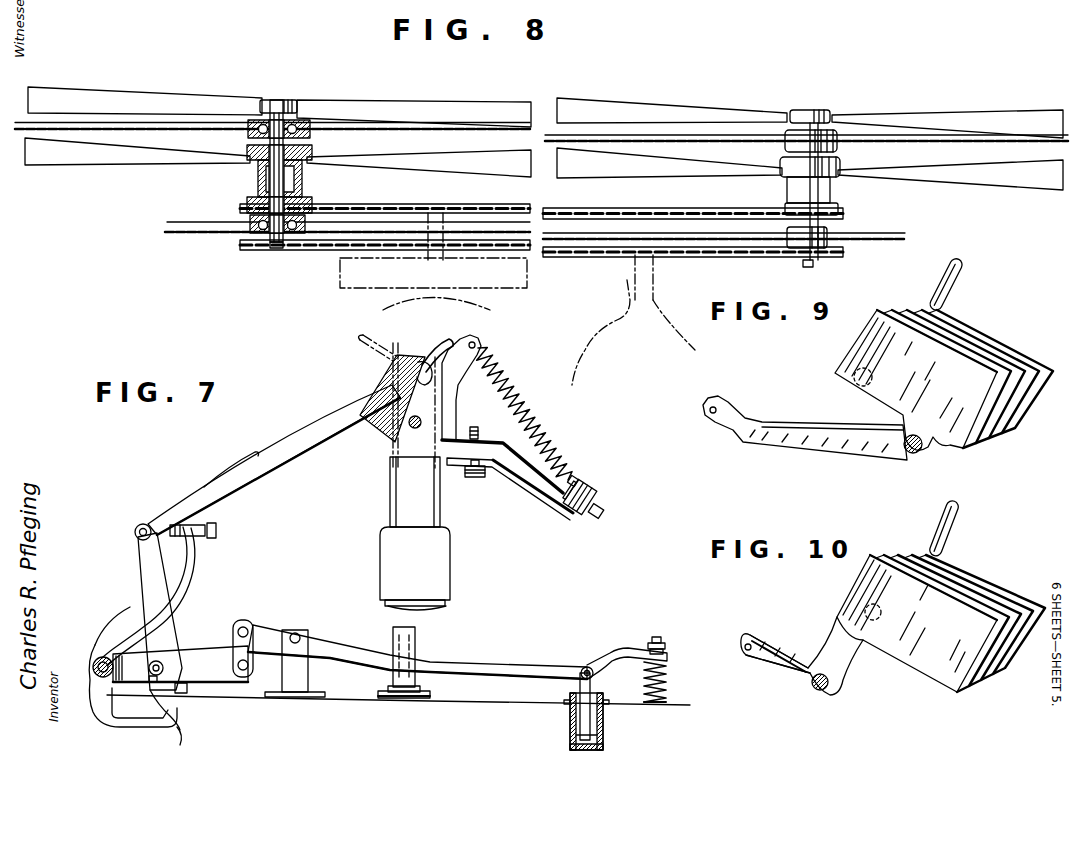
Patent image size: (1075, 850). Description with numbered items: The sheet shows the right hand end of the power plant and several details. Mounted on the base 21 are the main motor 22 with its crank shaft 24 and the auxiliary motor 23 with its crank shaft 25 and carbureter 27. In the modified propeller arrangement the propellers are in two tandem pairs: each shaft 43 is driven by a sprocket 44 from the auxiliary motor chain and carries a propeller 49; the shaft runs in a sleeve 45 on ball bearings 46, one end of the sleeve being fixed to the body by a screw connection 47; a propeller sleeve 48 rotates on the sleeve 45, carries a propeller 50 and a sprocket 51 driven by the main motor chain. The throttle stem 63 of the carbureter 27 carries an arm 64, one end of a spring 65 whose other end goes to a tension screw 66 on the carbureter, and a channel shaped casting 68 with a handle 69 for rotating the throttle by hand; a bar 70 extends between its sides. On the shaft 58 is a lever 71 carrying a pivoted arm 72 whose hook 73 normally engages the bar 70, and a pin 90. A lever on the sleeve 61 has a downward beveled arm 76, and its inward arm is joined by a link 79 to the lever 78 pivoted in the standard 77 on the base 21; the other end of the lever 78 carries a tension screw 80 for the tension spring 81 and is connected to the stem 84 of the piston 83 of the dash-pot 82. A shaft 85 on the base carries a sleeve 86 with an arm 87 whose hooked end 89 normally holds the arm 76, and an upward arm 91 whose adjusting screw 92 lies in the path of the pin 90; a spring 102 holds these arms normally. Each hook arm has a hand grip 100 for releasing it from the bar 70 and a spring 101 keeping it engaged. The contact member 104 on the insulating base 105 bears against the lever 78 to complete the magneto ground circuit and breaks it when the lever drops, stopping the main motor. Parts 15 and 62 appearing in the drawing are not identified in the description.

In FIG. 7, the bar 15 is at (218, 656).
In FIG. 7, the base 21 is at (483, 696).
In FIG. 8, the main motor 22 is at (478, 305).
In FIG. 8, the auxiliary motor 23 is at (608, 323).
In FIG. 8, the crank shaft 24 is at (449, 213).
In FIG. 8, the crank shaft 25 is at (635, 268).
In FIG. 7, the carbureter 27 is at (450, 541).
In FIG. 8, the shaft 43 is at (284, 100).
In FIG. 8, the sprocket 44 is at (250, 251).
In FIG. 8, the sleeve 45 is at (258, 188).
In FIG. 8, the ball bearing 46 is at (300, 126).
In FIG. 8, the screw connection 47 is at (250, 228).
In FIG. 8, the propeller sleeve 48 is at (256, 173).
In FIG. 8, the propeller 49 is at (458, 102).
In FIG. 8, the propeller 50 is at (90, 157).
In FIG. 8, the sprocket 51 is at (316, 208).
In FIG. 7, the shaft 58 is at (163, 663).
In FIG. 7, the sleeve 61 is at (522, 478).
In FIG. 7, the stop lug 62 is at (187, 692).
In FIG. 7, the throttle stem 63 is at (416, 430).
In FIG. 9, the throttle stem 63 is at (911, 453).
In FIG. 10, the throttle stem 63 is at (817, 692).
In FIG. 7, the arm 64 is at (452, 396).
In FIG. 9, the arm 64 is at (737, 428).
In FIG. 10, the arm 64 is at (768, 664).
In FIG. 7, the spring 65 is at (507, 381).
In FIG. 7, the tension screw 66 is at (603, 511).
In FIG. 7, the channel shaped casting 68 is at (373, 432).
In FIG. 9, the channel shaped casting 68 is at (1019, 358).
In FIG. 10, the channel shaped casting 68 is at (1000, 590).
In FIG. 7, the handle 69 is at (358, 343).
In FIG. 9, the handle 69 is at (960, 281).
In FIG. 10, the handle 69 is at (949, 526).
In FIG. 7, the bar 70 is at (393, 387).
In FIG. 9, the bar 70 is at (854, 384).
In FIG. 10, the bar 70 is at (865, 613).
In FIG. 7, the lever 71 is at (143, 587).
In FIG. 7, the arm 72 is at (297, 440).
In FIG. 7, the hook 73 is at (425, 363).
In FIG. 7, the downwardly extending arm 76 is at (172, 721).
In FIG. 7, the standard 77 is at (308, 674).
In FIG. 7, the lever 78 is at (355, 647).
In FIG. 7, the link 79 is at (250, 622).
In FIG. 7, the tension screw 80 is at (667, 648).
In FIG. 7, the tension spring 81 is at (667, 683).
In FIG. 7, the dash-pot 82 is at (570, 724).
In FIG. 7, the piston 83 is at (603, 736).
In FIG. 7, the stem 84 is at (593, 682).
In FIG. 7, the shaft 85 is at (97, 659).
In FIG. 7, the sleeve 86 is at (94, 668).
In FIG. 7, the arm 87 is at (94, 714).
In FIG. 7, the hooked end 89 is at (180, 730).
In FIG. 7, the pin 90 is at (143, 524).
In FIG. 7, the arm 91 is at (174, 592).
In FIG. 7, the adjusting screw 92 is at (205, 540).
In FIG. 7, the hand grip 100 is at (450, 340).
In FIG. 7, the spring 101 is at (227, 465).
In FIG. 7, the spring 102 is at (112, 645).
In FIG. 7, the contact member 104 is at (415, 634).
In FIG. 7, the insulating base 105 is at (392, 699).